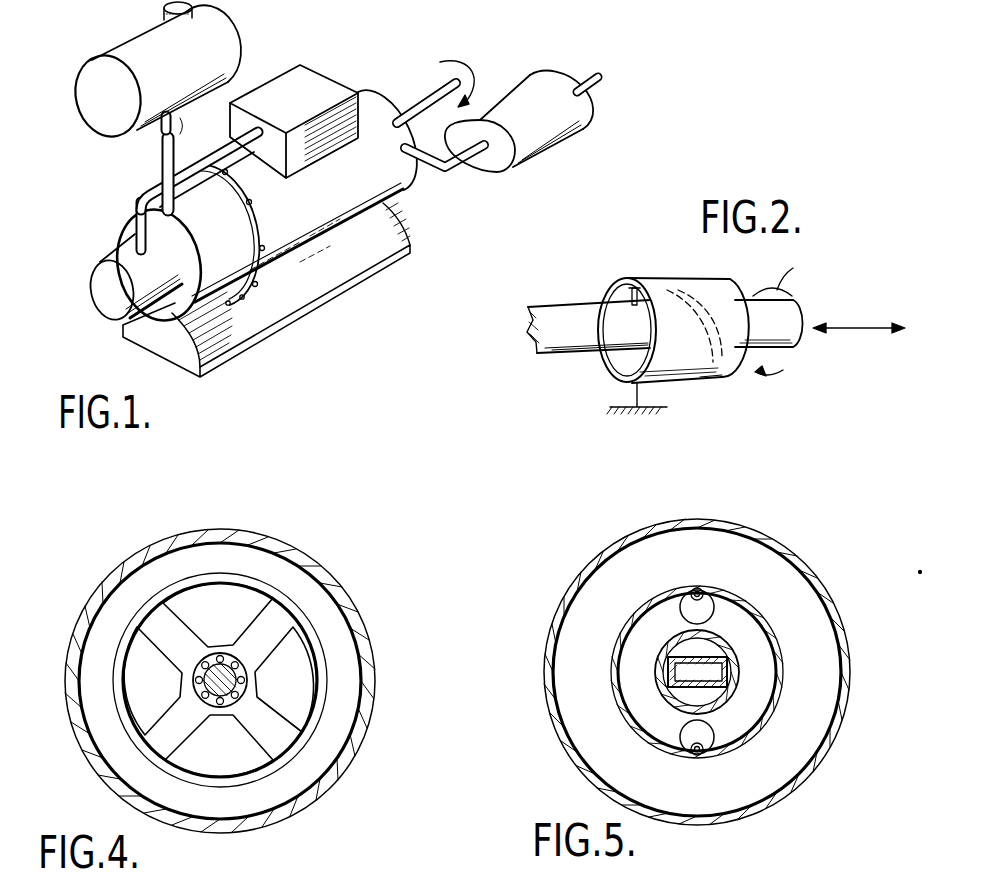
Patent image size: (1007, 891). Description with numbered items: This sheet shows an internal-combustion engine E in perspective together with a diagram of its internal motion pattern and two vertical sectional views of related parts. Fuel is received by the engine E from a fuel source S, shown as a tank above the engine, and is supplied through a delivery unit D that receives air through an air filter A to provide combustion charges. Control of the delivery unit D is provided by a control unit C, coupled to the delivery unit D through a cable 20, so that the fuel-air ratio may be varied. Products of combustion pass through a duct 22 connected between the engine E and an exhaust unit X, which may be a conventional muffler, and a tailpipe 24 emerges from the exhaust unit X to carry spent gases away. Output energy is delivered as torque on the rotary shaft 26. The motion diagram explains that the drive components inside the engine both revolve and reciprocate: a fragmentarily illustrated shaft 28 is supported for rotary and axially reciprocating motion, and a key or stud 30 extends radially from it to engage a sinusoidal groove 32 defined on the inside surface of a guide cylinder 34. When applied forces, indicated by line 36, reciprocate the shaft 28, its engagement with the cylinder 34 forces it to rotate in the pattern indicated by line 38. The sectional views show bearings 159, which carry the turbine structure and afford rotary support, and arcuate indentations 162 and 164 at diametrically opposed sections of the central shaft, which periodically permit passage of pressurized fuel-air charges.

In FIG. 1, the fuel source S is at (135, 33).
In FIG. 1, the control unit C is at (280, 82).
In FIG. 1, the engine E is at (343, 67).
In FIG. 1, the cable 20 is at (225, 147).
In FIG. 1, the rotary shaft 26 is at (433, 97).
In FIG. 1, the tailpipe 24 is at (592, 80).
In FIG. 1, the exhaust unit X is at (590, 130).
In FIG. 1, the duct 22 is at (436, 173).
In FIG. 1, the delivery unit D is at (136, 252).
In FIG. 1, the air filter A is at (108, 298).
In FIG. 2, the shaft 28 is at (580, 353).
In FIG. 2, the key or stud 30 is at (630, 297).
In FIG. 2, the sinusoidal groove 32 is at (668, 298).
In FIG. 2, the guide cylinder 34 is at (713, 378).
In FIG. 2, the line indicating applied forces 36 is at (868, 303).
In FIG. 2, the line indicating rotary motion pattern 38 is at (783, 370).
In FIG. 4, the bearings 159 is at (252, 674).
In FIG. 5, the arcuate indentation 162 is at (708, 645).
In FIG. 5, the arcuate indentation 164 is at (707, 707).